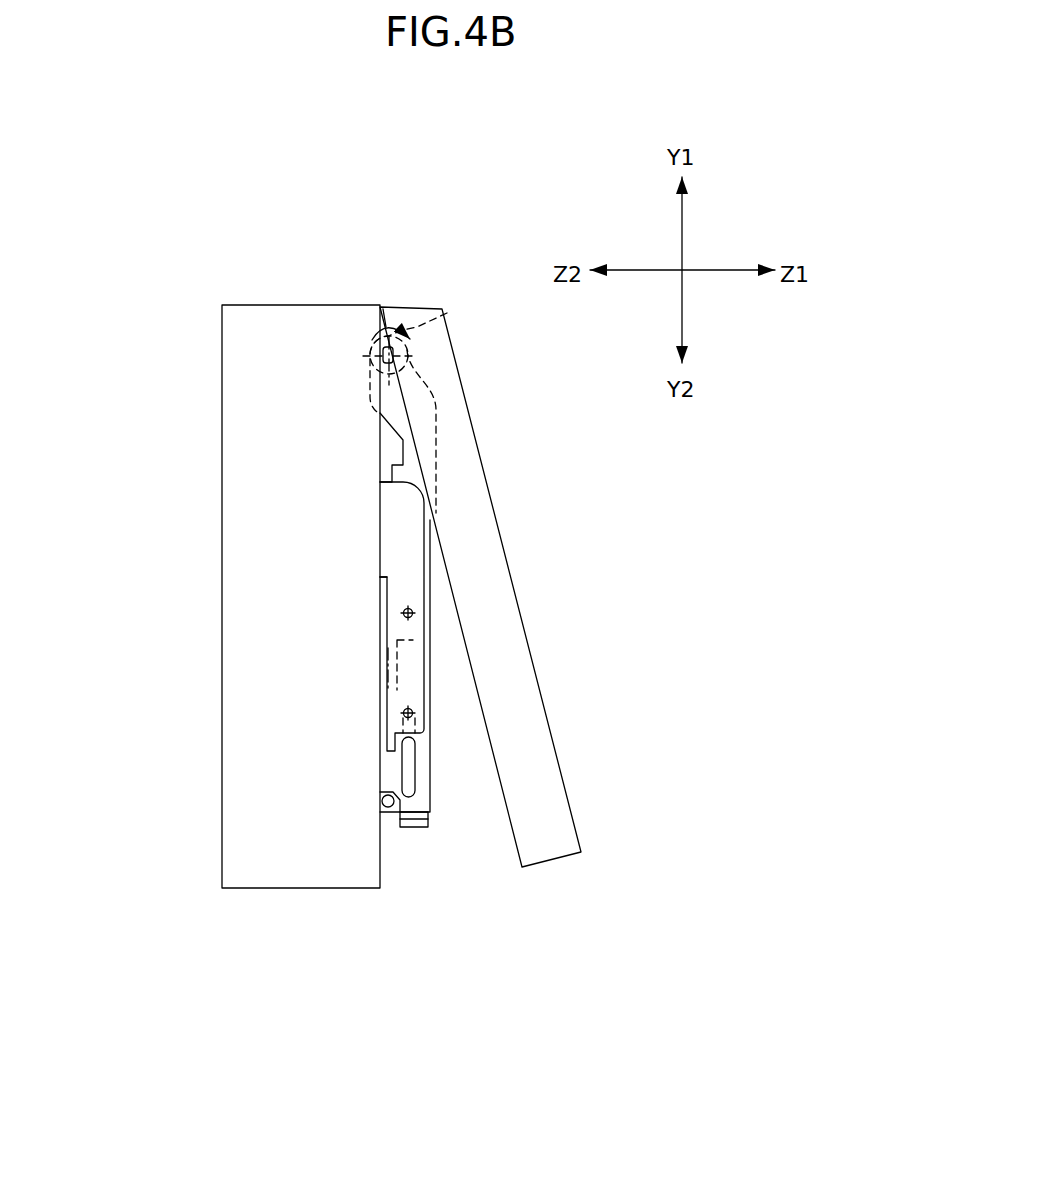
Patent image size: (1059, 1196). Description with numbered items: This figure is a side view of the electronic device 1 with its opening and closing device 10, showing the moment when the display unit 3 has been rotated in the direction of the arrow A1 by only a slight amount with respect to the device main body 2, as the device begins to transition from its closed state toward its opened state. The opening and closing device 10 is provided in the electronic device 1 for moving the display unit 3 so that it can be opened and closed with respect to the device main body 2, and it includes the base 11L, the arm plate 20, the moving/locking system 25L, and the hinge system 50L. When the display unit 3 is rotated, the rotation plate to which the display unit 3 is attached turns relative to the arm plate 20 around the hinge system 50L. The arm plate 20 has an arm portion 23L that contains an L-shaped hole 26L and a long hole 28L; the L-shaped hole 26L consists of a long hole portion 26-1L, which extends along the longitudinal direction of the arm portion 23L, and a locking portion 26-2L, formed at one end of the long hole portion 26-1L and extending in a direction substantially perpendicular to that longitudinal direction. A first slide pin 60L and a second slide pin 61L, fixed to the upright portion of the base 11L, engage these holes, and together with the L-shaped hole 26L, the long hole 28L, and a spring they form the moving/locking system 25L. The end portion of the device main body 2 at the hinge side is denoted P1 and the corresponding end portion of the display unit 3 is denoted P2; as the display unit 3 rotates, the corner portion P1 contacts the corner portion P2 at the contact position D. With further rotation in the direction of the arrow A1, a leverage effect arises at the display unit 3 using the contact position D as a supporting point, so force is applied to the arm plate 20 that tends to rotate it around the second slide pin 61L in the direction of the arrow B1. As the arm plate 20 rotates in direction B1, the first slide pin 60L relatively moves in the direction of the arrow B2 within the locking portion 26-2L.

The electronic device 1 is at (355, 169).
The device main body 2 is at (228, 851).
The display unit 3 is at (541, 803).
The opening and closing device 10 is at (443, 797).
The base 11L is at (410, 550).
The arm plate 20 is at (419, 437).
The arm portion 23L is at (398, 476).
The moving/locking system 25L is at (435, 701).
The L-shaped hole 26L is at (399, 669).
The long hole portion 26-1L is at (390, 659).
The locking portion 26-2L is at (386, 588).
The long hole 28L is at (410, 764).
The hinge system 50L is at (474, 297).
The first slide pin 60L is at (412, 615).
The second slide pin 61L is at (402, 717).
The arrow B1 (arm plate rotation direction) B1 is at (393, 357).
The arrow B2 (first slide pin relative movement direction) B2 is at (404, 614).
The contact position D is at (382, 305).
The corner portion of the device main body P1 is at (372, 306).
The corner portion of the display unit P2 is at (386, 308).
The arrow A1 (display unit opening rotation direction) A1 is at (560, 942).